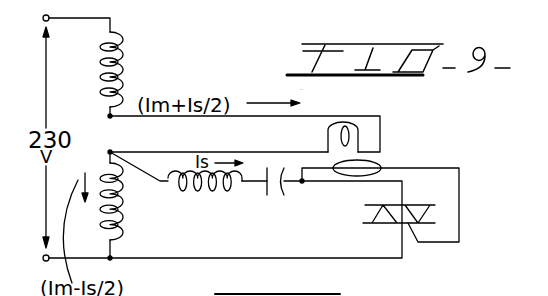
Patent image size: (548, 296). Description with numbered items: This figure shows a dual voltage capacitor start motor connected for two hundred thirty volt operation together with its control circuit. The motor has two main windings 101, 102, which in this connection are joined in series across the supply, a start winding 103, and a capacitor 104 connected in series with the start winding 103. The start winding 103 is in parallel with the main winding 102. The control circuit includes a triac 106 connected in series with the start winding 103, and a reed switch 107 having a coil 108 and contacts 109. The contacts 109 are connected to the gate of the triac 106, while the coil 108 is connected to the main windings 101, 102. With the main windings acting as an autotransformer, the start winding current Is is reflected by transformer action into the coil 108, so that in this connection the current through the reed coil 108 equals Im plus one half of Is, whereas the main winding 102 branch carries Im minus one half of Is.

The main winding 101 is at (123, 54).
The main winding 102 is at (123, 218).
The start winding 103 is at (197, 192).
The capacitor 104 is at (267, 195).
The triac 106 is at (440, 218).
The reed switch 107 is at (388, 162).
The coil 108 is at (358, 133).
The contacts 109 is at (350, 177).